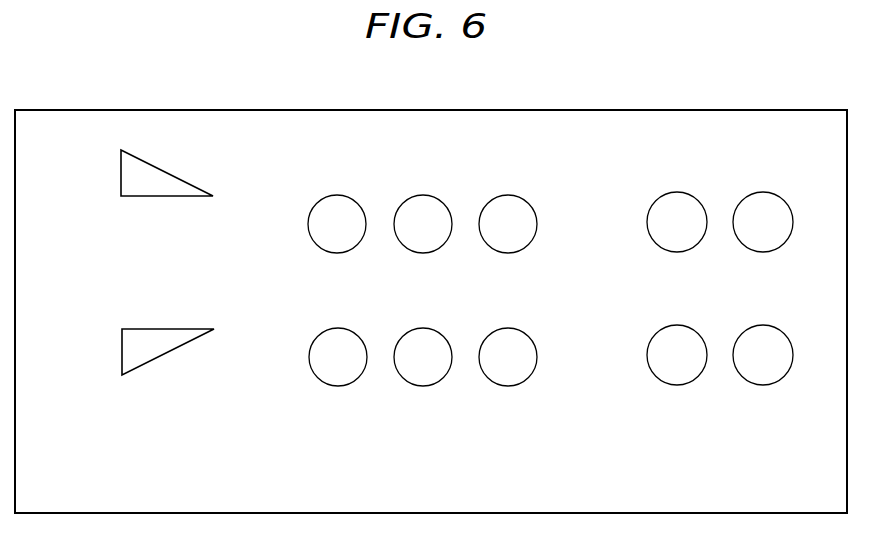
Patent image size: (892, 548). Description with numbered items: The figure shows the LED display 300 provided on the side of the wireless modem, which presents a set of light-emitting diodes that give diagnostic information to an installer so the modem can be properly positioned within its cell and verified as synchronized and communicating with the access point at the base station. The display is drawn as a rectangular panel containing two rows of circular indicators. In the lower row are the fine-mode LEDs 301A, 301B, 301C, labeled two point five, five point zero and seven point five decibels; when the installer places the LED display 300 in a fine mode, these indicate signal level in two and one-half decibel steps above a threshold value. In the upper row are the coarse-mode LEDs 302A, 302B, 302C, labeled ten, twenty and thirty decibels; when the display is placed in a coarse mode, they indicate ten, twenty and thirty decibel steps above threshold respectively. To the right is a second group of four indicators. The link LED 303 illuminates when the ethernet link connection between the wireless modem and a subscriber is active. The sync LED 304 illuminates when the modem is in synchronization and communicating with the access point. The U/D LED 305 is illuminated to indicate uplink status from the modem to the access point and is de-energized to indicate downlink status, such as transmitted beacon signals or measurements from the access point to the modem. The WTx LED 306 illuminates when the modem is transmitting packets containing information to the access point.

The LED display 300 is at (168, 78).
The fine mode LED 301A is at (562, 331).
The fine mode LED 301B is at (405, 331).
The fine mode LED 301C is at (314, 336).
The coarse mode LED 302A is at (533, 243).
The coarse mode LED 302B is at (420, 253).
The coarse mode LED 302C is at (311, 243).
The link LED 303 is at (653, 340).
The sync LED 304 is at (650, 238).
The U/D LED 305 is at (743, 245).
The WTx LED 306 is at (758, 327).